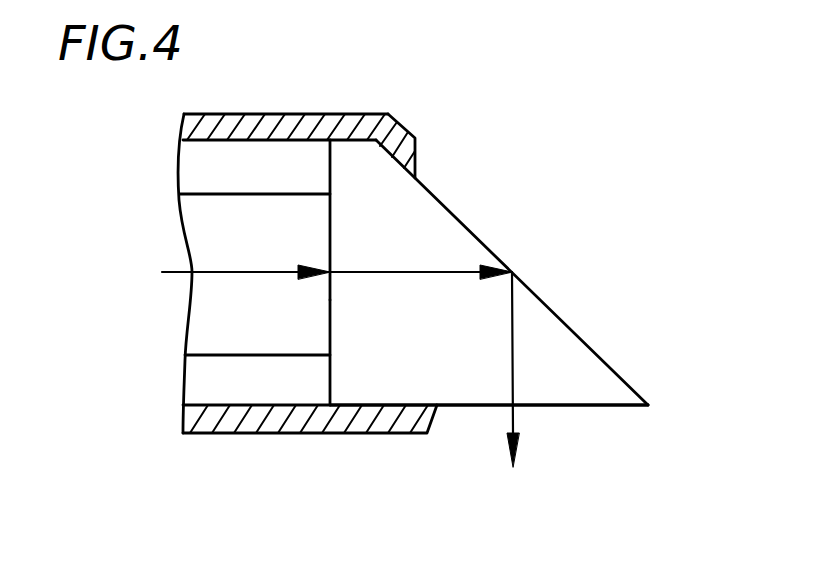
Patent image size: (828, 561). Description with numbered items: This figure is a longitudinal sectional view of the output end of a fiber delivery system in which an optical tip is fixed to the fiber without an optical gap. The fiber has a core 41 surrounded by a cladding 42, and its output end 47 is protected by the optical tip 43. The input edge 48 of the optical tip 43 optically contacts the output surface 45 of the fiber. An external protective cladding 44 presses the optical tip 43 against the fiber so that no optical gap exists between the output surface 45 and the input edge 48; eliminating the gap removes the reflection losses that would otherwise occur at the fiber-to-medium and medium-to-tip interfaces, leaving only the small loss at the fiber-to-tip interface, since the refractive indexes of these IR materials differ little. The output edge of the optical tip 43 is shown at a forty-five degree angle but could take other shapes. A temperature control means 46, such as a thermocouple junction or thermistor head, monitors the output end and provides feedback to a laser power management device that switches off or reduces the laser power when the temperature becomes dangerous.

The core 41 is at (220, 290).
The cladding 42 is at (190, 172).
The optical tip 43 is at (578, 372).
The external protective cladding 44 is at (412, 135).
The output surface 45 is at (330, 168).
The temperature control means 46 is at (432, 420).
The output end 47 is at (253, 113).
The input edge 48 is at (332, 184).